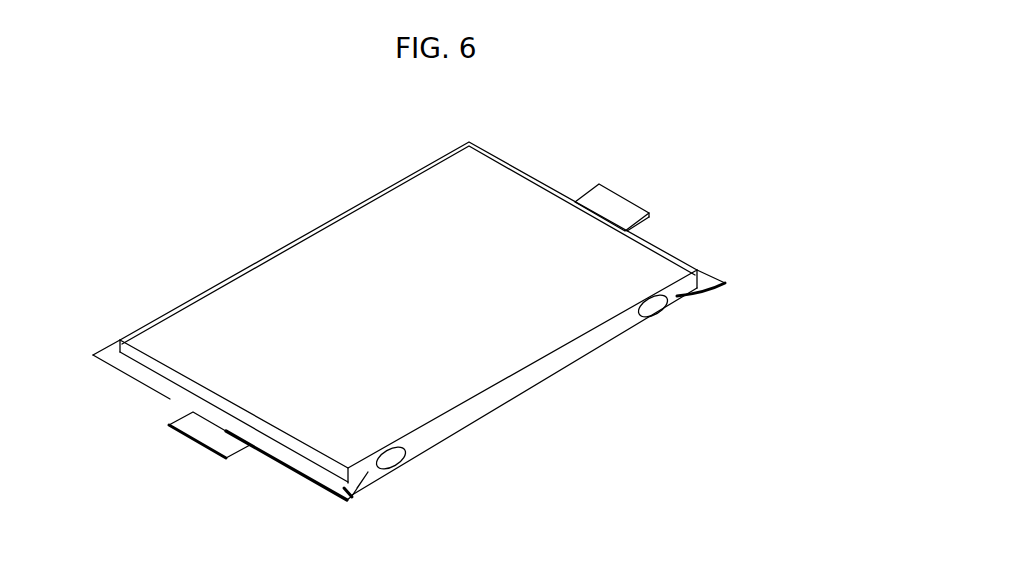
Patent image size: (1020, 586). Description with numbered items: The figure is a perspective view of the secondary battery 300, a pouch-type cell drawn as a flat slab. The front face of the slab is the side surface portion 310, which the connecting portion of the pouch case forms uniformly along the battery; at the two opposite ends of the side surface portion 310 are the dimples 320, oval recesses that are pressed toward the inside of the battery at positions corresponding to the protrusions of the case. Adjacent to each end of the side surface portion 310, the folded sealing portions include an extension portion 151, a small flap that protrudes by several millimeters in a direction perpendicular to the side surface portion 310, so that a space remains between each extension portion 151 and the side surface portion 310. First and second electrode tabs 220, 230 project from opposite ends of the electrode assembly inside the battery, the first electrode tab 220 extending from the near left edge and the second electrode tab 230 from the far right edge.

The secondary battery 300 is at (246, 203).
The side surface portion 310 is at (512, 394).
The dimples 320 is at (665, 322).
The extension portion 151 is at (722, 292).
The second electrode tab 230 is at (612, 210).
The first electrode tab 220 is at (188, 427).